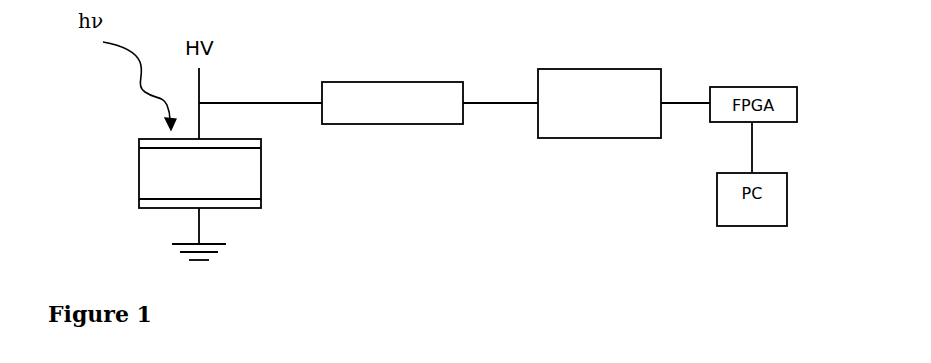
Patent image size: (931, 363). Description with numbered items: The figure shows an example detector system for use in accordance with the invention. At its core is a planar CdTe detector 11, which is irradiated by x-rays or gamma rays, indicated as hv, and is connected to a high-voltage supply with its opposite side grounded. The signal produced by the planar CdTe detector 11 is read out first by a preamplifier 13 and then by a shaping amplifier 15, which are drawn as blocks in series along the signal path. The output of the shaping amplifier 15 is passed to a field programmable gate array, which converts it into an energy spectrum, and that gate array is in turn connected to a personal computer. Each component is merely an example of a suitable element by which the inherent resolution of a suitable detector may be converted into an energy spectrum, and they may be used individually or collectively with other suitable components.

The planar CdTe detector 11 is at (140, 163).
The preamplifier 13 is at (404, 112).
The shaping amplifier 15 is at (611, 119).